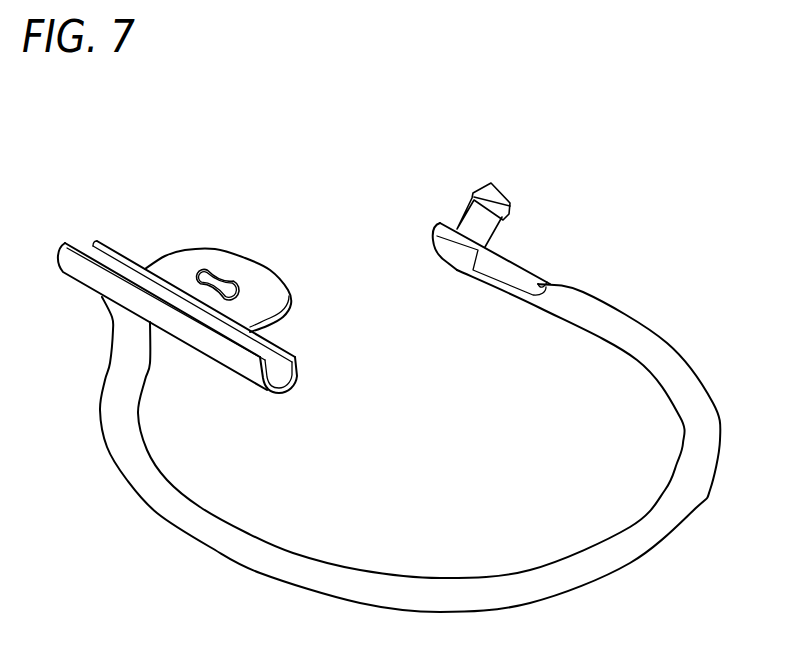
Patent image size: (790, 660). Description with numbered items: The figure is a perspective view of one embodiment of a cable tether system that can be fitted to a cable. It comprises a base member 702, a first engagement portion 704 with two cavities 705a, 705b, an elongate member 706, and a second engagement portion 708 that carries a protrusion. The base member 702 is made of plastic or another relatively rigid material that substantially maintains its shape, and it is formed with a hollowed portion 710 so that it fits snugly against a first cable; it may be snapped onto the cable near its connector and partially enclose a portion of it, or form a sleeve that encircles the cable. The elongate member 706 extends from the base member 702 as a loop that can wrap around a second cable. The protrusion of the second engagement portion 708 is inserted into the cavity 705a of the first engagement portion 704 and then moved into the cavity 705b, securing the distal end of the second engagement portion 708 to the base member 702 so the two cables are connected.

The base member 702 is at (95, 281).
The first engagement portion 704 is at (267, 290).
The cavity 705a is at (230, 287).
The cavity 705b is at (207, 271).
The elongate member 706 is at (167, 505).
The second engagement portion 708 is at (492, 202).
The hollowed portion 710 is at (277, 370).